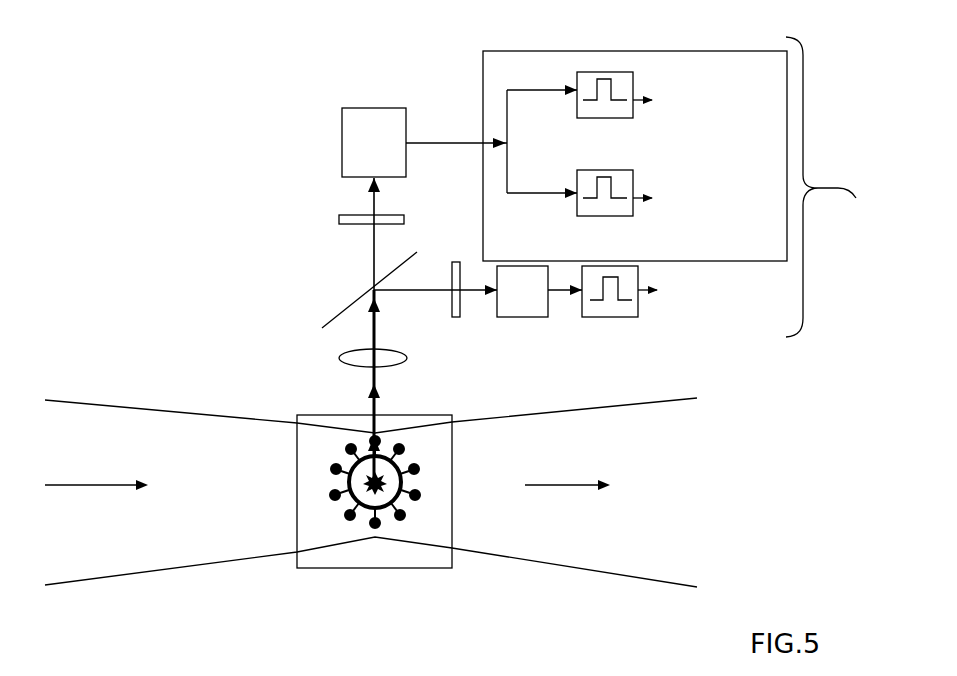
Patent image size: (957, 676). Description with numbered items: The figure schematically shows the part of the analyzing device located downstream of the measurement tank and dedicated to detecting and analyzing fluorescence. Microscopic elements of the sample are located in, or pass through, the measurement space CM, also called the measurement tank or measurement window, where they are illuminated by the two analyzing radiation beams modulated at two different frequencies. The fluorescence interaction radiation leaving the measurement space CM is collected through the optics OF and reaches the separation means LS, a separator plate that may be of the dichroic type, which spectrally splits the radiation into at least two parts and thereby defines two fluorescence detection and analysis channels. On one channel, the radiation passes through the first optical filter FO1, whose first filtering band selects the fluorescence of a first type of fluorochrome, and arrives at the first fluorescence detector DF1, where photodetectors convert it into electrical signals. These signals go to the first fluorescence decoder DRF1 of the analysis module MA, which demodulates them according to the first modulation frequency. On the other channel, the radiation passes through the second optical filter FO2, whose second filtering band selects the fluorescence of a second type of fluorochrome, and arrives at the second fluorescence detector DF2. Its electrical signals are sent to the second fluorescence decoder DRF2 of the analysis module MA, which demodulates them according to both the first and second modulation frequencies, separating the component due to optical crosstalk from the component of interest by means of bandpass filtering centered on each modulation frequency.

The second fluorescence detector DF2 is at (374, 108).
The second fluorescence decoder DRF2 is at (602, 51).
The analysis module MA is at (836, 187).
The second optical filter FO2 is at (339, 218).
The separator plate LS is at (332, 317).
The objective/focusing lens OF is at (338, 362).
The first optical filter FO1 is at (453, 317).
The first fluorescence detector DF1 is at (523, 318).
The first fluorescence decoder DRF1 is at (637, 316).
The measurement space CM is at (297, 567).